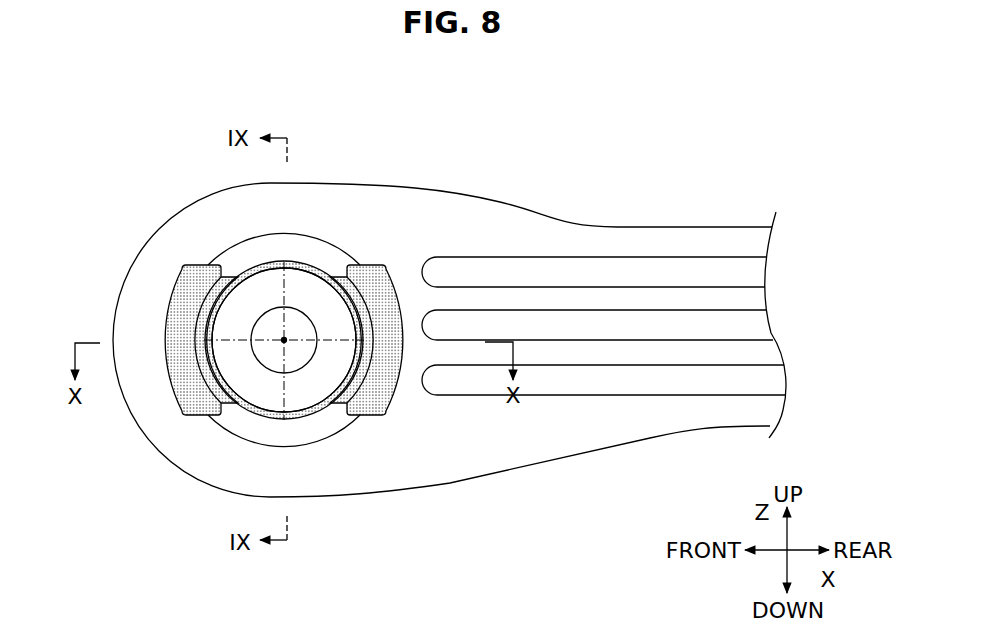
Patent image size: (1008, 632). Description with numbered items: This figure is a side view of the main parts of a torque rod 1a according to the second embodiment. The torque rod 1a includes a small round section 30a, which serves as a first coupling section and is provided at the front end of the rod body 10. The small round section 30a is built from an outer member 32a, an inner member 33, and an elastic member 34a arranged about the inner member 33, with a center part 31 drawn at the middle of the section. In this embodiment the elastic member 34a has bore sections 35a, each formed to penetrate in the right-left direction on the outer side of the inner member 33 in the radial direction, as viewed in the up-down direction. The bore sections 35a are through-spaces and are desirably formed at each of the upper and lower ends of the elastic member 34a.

The torque rod 1a is at (284, 95).
The rod body 10 is at (704, 226).
The small round section 30a is at (200, 118).
The outer member 32a is at (147, 285).
The elastic member 34a is at (212, 290).
The inner member 33 is at (252, 313).
The shaft 31 is at (278, 350).
The bore sections 35a is at (307, 248).